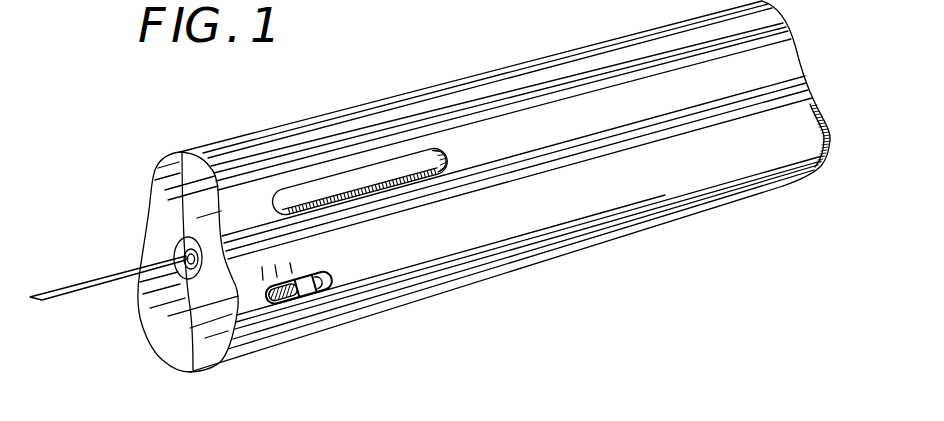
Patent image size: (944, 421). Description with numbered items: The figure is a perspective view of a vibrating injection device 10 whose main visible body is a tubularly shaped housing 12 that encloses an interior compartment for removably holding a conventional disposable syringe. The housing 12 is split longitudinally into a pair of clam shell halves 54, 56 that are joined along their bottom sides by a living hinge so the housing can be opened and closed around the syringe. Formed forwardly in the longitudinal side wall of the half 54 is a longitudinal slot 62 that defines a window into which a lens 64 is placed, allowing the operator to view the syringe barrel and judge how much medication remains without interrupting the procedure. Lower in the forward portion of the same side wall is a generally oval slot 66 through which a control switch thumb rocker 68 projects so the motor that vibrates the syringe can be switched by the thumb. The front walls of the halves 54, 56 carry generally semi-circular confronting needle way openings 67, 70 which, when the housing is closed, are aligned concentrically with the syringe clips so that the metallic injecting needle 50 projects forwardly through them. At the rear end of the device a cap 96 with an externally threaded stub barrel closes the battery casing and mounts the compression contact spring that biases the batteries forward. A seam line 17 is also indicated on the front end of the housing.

The vibrating injection device 10 is at (384, 89).
The housing 12 is at (697, 216).
The seam line 17 is at (193, 348).
The injecting needle 50 is at (67, 292).
The clam shell half 54 is at (547, 217).
The clam shell half 56 is at (157, 327).
The longitudinal slot 62 is at (450, 158).
The lens 64 is at (427, 155).
The oval slot 66 is at (304, 274).
The needle way opening 67 is at (188, 273).
The control switch thumb rocker 68 is at (305, 300).
The needle way opening 70 is at (176, 246).
The cap 96 is at (822, 118).